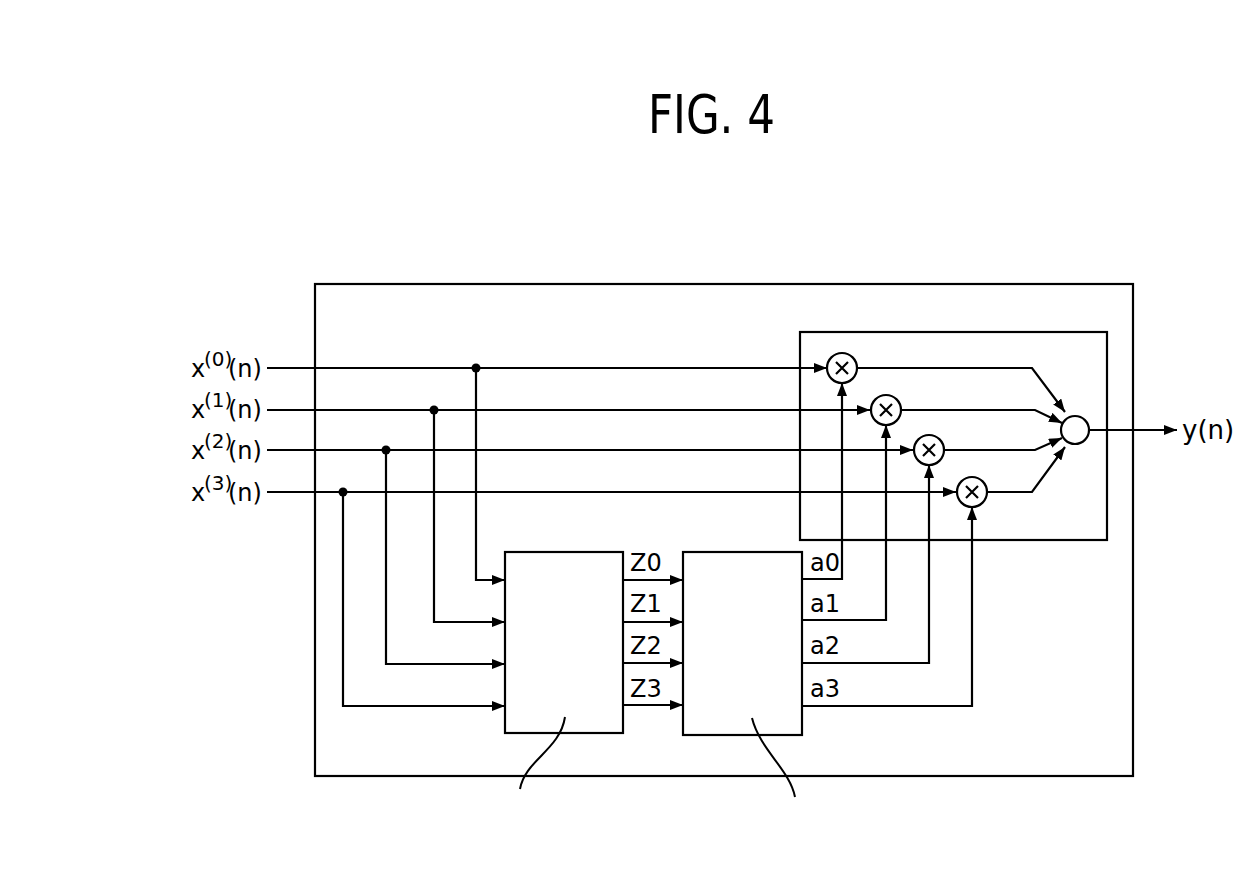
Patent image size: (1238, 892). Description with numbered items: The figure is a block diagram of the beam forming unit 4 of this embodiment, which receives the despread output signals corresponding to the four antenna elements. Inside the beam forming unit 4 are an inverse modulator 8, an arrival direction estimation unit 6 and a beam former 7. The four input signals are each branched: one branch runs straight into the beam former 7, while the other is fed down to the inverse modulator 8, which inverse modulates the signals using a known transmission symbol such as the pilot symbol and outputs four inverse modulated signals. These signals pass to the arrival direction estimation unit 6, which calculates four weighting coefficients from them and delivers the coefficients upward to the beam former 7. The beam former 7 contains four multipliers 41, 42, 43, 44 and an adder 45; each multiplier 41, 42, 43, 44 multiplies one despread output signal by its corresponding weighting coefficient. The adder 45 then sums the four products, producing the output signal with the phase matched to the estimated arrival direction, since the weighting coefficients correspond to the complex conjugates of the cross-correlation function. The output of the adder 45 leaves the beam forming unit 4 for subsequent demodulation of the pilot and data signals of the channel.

The beam forming unit 4 is at (380, 278).
The arrival direction estimation unit 6 is at (718, 558).
The beam former 7 is at (827, 331).
The inverse modulator 8 is at (538, 558).
The multiplier 41 is at (856, 360).
The multiplier 42 is at (902, 402).
The multiplier 43 is at (945, 443).
The multiplier 44 is at (989, 485).
The adder 45 is at (1079, 413).